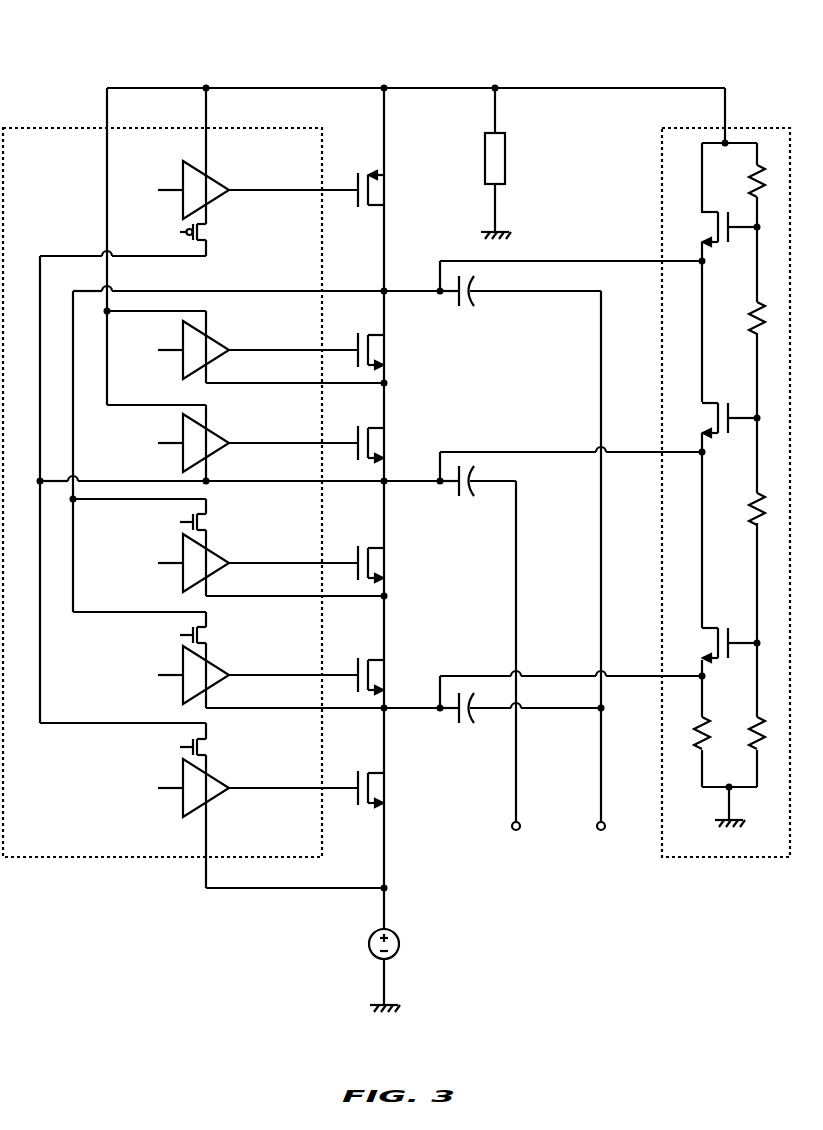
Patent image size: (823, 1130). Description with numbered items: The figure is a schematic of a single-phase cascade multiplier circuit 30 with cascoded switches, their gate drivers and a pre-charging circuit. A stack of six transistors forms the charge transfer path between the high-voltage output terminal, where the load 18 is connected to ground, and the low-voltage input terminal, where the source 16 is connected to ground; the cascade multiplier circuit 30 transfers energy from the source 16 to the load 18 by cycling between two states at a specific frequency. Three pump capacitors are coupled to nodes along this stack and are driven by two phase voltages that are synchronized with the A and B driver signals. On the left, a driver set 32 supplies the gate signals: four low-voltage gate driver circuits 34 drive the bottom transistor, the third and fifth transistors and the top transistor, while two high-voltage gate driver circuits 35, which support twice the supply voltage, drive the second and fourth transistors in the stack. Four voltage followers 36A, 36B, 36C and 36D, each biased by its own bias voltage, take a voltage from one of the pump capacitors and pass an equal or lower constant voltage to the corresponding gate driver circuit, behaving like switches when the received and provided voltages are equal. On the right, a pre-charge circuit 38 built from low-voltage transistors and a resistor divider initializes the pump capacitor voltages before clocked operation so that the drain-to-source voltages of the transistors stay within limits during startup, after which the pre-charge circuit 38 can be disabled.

The single-phase cascade multiplier circuit 30 is at (250, 74).
The driver set 32 is at (39, 128).
The low-voltage gate driver circuit 34 is at (213, 177).
The high-voltage gate driver circuit 35 is at (213, 430).
The voltage follower 36A is at (208, 746).
The voltage follower 36B is at (208, 634).
The voltage follower 36C is at (208, 521).
The voltage follower 36D is at (208, 231).
The load 18 is at (485, 143).
The pre-charge circuit 38 is at (662, 160).
The source 16 is at (369, 944).